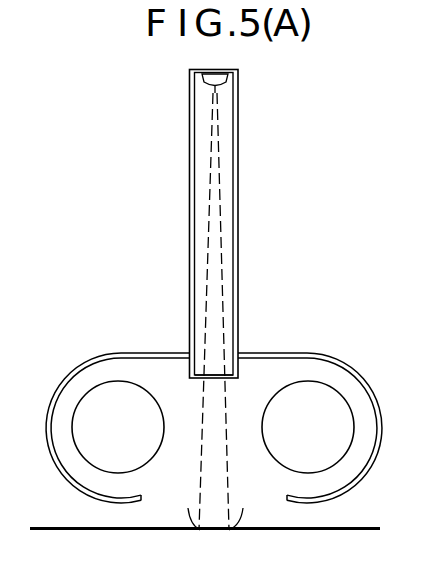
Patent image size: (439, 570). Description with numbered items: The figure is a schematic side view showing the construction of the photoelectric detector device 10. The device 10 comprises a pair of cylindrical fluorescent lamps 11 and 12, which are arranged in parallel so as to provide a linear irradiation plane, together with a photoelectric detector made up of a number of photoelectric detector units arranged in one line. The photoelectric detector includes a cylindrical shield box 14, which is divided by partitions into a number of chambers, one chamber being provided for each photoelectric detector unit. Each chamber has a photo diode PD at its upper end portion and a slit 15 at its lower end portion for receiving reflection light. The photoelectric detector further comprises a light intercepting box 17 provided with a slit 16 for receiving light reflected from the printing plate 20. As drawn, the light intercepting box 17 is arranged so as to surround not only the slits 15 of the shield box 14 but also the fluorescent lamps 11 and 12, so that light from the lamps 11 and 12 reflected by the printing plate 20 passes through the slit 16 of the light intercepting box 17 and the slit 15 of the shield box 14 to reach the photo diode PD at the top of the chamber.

The photoelectric detector device 10 is at (137, 242).
The cylindrical fluorescent lamp 11 is at (82, 399).
The cylindrical fluorescent lamp 12 is at (342, 393).
The cylindrical shield box 14 is at (238, 184).
The slit 15 is at (213, 377).
The slit 16 is at (229, 531).
The light intercepting box 17 is at (380, 431).
The printing plate 20 is at (313, 532).
The photo diode PD is at (215, 47).